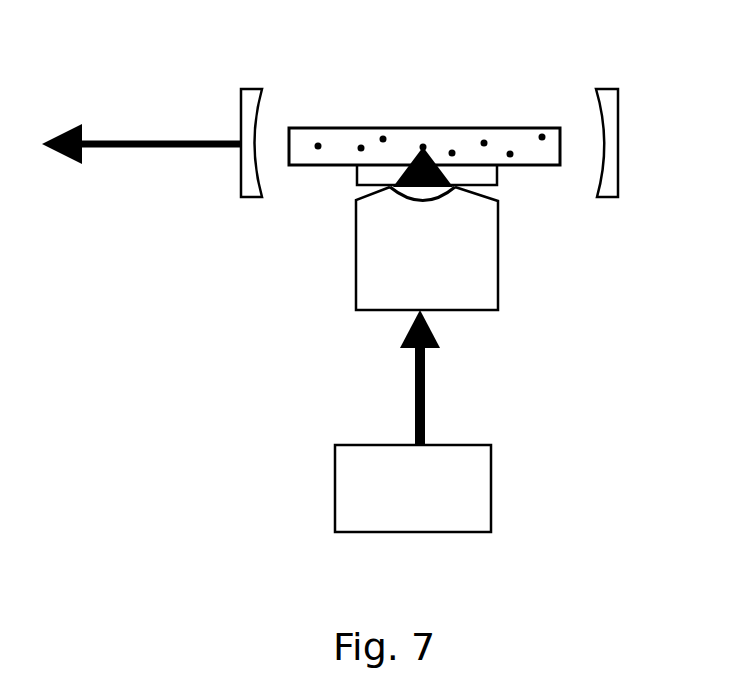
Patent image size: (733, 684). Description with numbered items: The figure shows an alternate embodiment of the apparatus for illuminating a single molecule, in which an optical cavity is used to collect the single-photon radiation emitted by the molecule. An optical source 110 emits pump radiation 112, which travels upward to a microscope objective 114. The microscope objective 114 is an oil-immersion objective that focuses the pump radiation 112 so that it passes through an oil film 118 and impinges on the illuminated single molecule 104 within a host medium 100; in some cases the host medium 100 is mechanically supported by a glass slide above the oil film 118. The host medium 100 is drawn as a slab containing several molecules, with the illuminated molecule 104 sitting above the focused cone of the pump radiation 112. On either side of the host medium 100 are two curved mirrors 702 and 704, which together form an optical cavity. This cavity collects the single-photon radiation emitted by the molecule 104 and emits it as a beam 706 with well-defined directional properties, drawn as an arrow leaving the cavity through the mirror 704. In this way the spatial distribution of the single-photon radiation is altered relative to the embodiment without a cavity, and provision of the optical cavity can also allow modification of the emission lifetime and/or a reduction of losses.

The host medium 100 is at (515, 136).
The single molecule 104 is at (422, 143).
The oil film 118 is at (368, 176).
The microscope objective 114 is at (500, 286).
The pump radiation 112 is at (414, 397).
The optical source 110 is at (491, 500).
The mirror 702 is at (607, 185).
The mirror 704 is at (240, 190).
The beam 706 is at (142, 137).